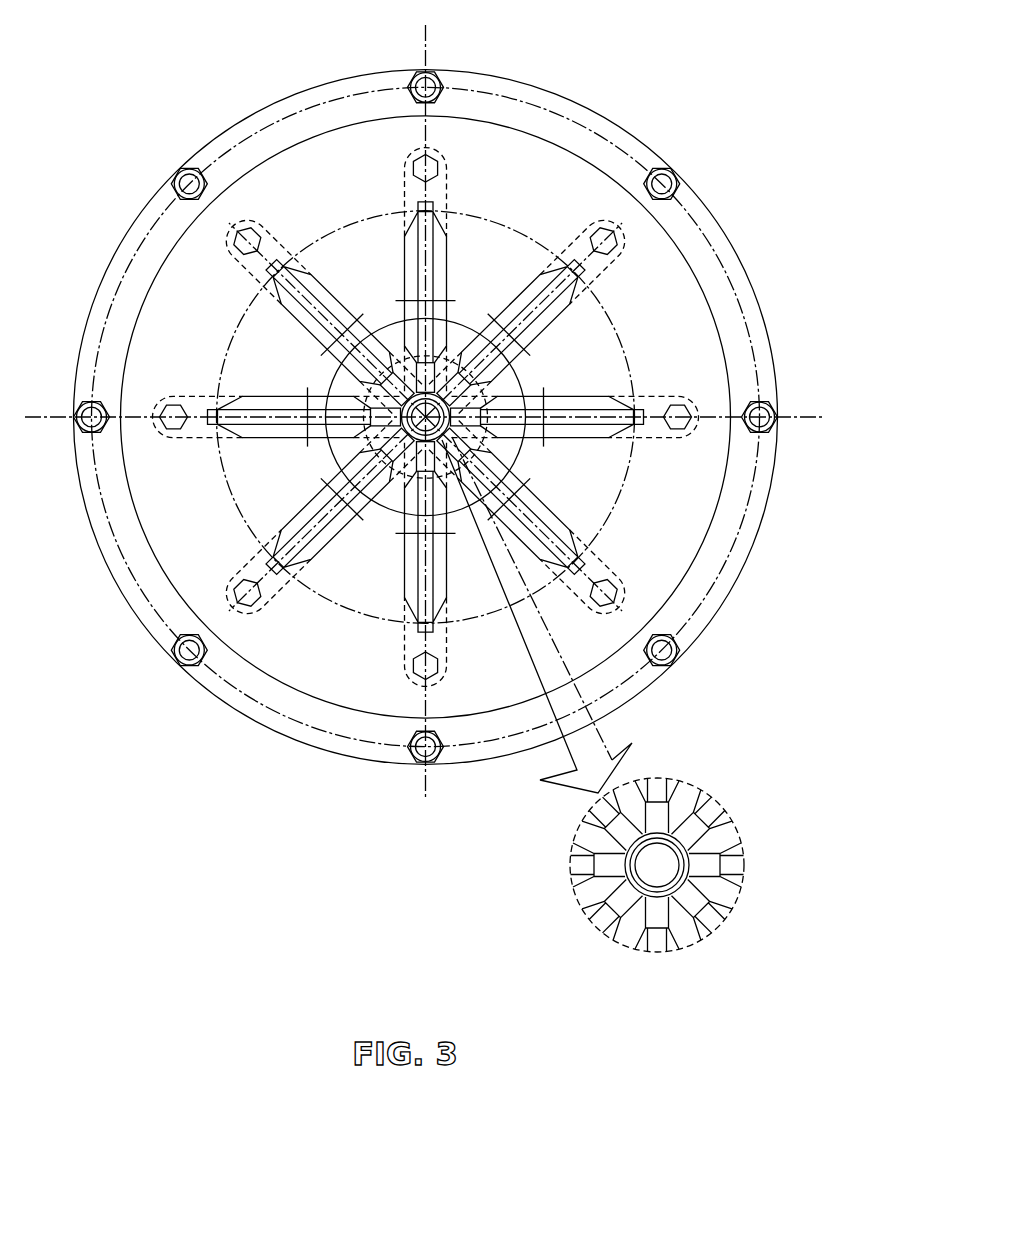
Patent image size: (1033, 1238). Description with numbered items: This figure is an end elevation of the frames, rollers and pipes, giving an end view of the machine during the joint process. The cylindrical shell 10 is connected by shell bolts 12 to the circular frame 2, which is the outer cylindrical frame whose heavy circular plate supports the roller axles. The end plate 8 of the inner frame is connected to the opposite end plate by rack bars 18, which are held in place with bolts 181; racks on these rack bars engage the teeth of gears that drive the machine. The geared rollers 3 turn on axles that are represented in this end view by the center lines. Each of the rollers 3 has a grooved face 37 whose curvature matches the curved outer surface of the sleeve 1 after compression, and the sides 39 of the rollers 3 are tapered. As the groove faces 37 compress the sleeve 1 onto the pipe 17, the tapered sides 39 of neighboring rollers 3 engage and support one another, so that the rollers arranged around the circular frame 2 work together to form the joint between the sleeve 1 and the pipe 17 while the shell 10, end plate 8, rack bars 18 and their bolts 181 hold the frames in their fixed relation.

The sleeve 1 is at (657, 865).
The circular frame 2 is at (426, 417).
The geared roller 3 is at (426, 417).
The end plate 8 is at (426, 416).
The cylindrical shell 10 is at (426, 417).
The shell bolt 12 is at (426, 417).
The pipe 17 is at (426, 416).
The rack bar 18 is at (426, 417).
The bolt 181 is at (426, 416).
The grooved face 37 is at (426, 417).
The tapered side 39 is at (426, 417).